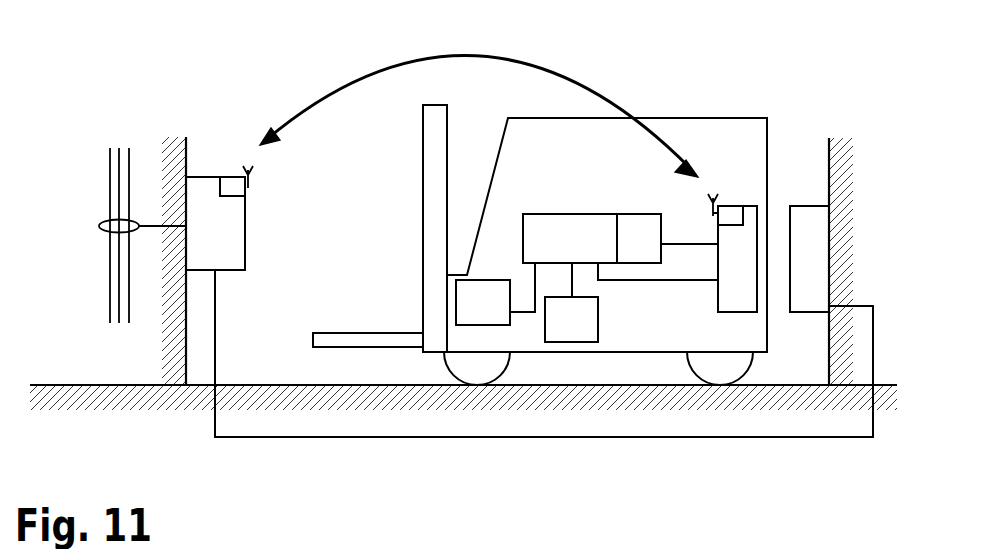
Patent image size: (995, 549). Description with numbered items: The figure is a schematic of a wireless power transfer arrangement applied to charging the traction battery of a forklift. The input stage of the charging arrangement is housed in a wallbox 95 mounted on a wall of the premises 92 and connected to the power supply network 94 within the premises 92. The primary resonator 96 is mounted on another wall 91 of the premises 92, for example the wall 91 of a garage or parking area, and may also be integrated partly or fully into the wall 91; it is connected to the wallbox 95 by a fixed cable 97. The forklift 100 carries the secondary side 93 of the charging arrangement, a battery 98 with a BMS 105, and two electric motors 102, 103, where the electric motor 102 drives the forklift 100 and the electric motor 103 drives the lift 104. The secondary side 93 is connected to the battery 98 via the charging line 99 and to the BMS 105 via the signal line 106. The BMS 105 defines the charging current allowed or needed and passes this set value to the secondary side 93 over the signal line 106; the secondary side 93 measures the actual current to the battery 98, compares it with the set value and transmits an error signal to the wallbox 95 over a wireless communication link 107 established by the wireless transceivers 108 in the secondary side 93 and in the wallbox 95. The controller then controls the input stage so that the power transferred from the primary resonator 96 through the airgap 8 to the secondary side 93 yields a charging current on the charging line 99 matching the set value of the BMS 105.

The airgap 8 is at (841, 244).
The wall 91 is at (848, 203).
The premises 92 is at (80, 235).
The secondary side 93 is at (737, 259).
The power supply network 94 is at (109, 287).
The wallbox 95 is at (215, 223).
The primary resonator 96 is at (809, 259).
The fixed cable 97 is at (213, 436).
The battery 98 is at (570, 238).
The charging line 99 is at (687, 282).
The forklift 100 is at (700, 116).
The electric motor 102 is at (571, 302).
The electric motor 103 is at (495, 294).
The lift 104 is at (380, 333).
The BMS 105 is at (632, 214).
The signal line 106 is at (680, 243).
The wireless communication link 107 is at (568, 72).
The wireless transceiver 108 is at (232, 181).